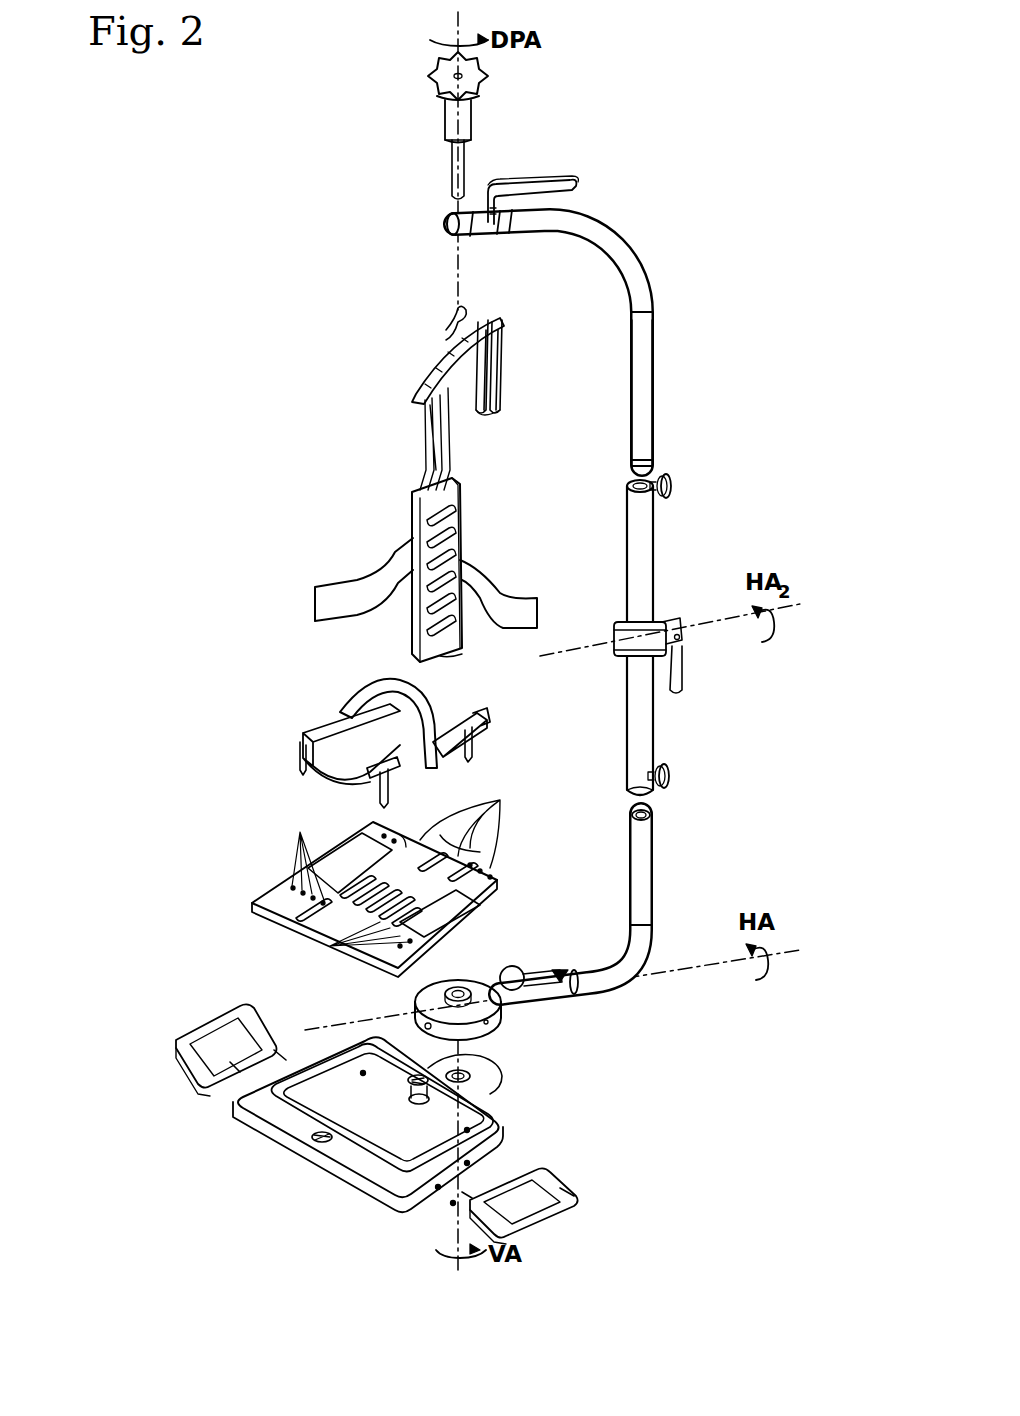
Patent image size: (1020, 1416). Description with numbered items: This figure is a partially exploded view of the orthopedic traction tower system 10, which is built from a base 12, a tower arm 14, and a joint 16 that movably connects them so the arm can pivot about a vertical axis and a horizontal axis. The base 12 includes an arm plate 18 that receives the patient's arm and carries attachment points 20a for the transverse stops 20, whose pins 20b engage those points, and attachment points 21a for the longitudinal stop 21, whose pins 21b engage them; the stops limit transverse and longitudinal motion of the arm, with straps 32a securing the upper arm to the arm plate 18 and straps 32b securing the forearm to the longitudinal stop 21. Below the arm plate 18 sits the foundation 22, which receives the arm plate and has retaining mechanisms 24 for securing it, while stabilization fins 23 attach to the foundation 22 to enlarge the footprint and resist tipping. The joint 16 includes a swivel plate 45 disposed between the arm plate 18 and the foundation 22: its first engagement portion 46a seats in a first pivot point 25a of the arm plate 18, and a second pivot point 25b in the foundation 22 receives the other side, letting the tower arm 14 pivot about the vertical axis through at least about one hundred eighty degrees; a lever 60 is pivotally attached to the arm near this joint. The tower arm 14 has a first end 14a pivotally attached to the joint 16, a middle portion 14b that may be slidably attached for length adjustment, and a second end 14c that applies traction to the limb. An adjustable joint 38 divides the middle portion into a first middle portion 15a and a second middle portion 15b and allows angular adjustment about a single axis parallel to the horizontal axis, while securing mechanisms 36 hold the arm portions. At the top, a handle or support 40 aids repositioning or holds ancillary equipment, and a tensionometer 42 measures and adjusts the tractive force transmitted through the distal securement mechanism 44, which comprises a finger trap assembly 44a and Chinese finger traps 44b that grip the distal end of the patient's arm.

The traction tower system 10 is at (126, 350).
The base 12 is at (230, 1200).
The tower arm 14 is at (802, 466).
The first end 14a is at (570, 996).
The middle portion 14b is at (658, 546).
The second end 14c is at (546, 234).
The first middle portion 15a is at (628, 750).
The second middle portion 15b is at (626, 566).
The joint 16 is at (556, 1058).
The arm plate 18 is at (264, 896).
The transverse stops 20 is at (304, 734).
The attachment points 20a is at (378, 846).
The pins 20b is at (478, 756).
The longitudinal stop 21 is at (462, 506).
The attachment points 21a is at (500, 800).
The pins 21b is at (450, 659).
The foundation 22 is at (350, 1200).
The stabilization fins 23 is at (188, 1034).
The retaining mechanisms 24 is at (406, 1108).
The first pivot point 25a is at (406, 844).
The second pivot point 25b is at (460, 1074).
The straps 32a is at (360, 698).
The straps 32b is at (498, 574).
The securing mechanisms 36 is at (668, 474).
The adjustable joint 38 is at (660, 620).
The handle or support 40 is at (508, 184).
The tensionometer 42 is at (388, 114).
The distal securement mechanism 44 is at (342, 352).
The finger trap assembly 44a is at (438, 372).
The Chinese finger traps 44b is at (502, 388).
The swivel plate 45 is at (472, 980).
The first engagement portion 46a is at (448, 992).
The lever 60 is at (536, 976).